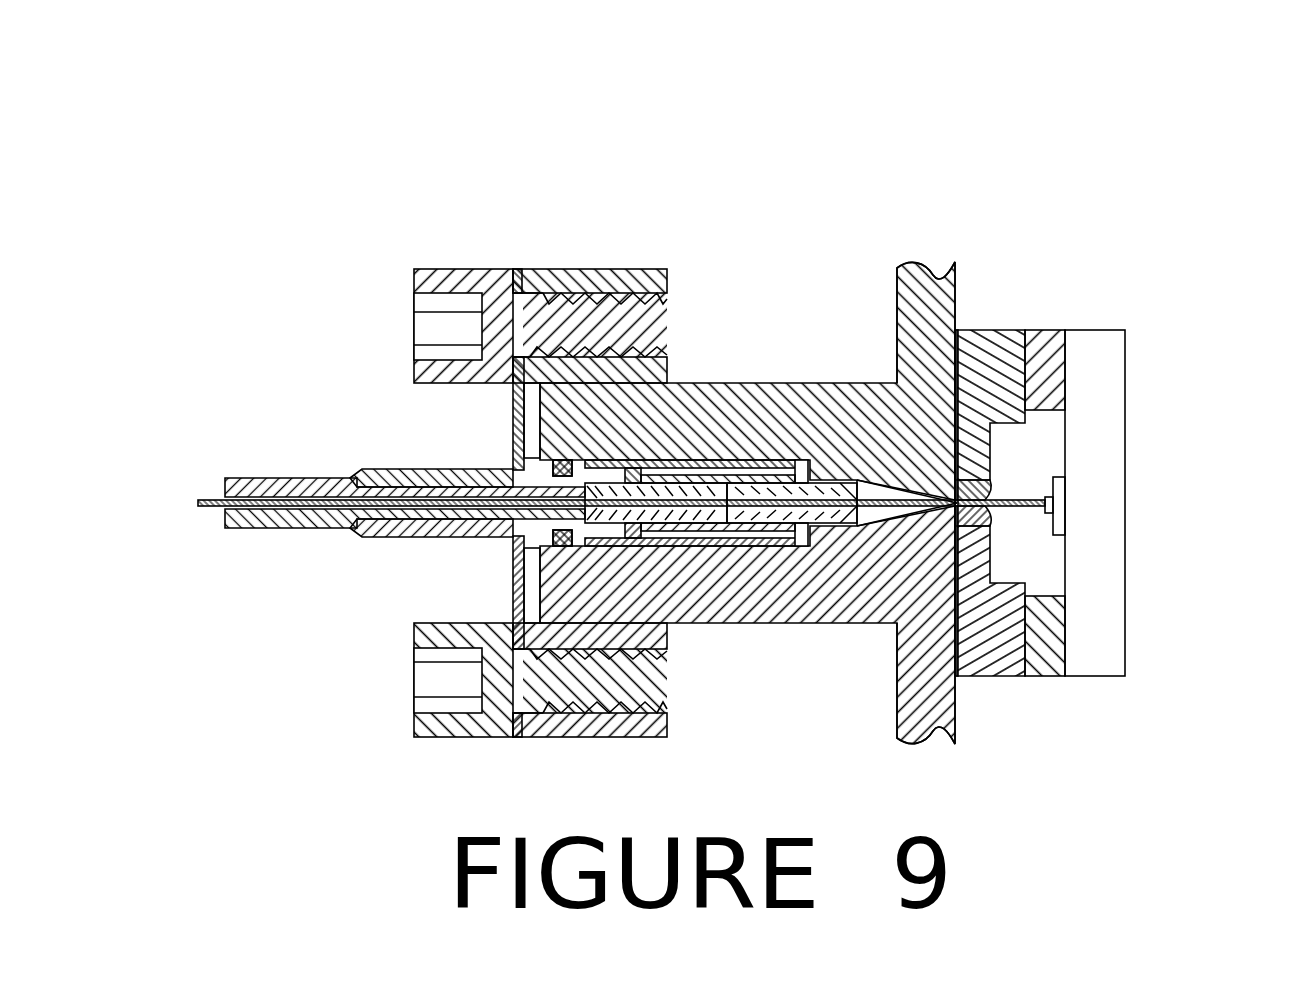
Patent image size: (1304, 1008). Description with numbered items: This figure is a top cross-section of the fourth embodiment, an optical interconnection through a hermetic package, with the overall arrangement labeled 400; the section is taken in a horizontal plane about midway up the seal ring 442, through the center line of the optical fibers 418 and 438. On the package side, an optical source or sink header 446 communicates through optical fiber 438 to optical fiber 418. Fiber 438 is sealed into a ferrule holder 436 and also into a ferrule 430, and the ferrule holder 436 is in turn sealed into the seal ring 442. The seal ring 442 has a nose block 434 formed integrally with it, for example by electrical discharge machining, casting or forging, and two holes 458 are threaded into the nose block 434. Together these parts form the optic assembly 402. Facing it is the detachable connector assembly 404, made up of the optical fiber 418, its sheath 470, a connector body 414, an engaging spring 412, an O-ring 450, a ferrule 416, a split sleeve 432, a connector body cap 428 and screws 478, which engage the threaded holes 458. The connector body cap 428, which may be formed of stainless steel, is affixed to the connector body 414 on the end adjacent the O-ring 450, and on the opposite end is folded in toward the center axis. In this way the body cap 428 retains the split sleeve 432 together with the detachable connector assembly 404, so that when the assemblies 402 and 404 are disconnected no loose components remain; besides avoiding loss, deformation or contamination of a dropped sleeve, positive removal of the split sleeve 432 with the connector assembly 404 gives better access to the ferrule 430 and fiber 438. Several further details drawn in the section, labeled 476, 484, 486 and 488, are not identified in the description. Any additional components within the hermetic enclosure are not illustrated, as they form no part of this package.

The probe assembly 400 is at (312, 72).
The optic assembly 402 is at (1195, 228).
The detachable connector assembly 404 is at (228, 692).
The engaging spring 412 is at (515, 269).
The connector body 414 is at (420, 472).
The ferrule 416 is at (535, 553).
The optical fiber 418 is at (203, 505).
The connector body cap 428 is at (793, 458).
The ferrule 430 is at (838, 523).
The split sleeve 432 is at (785, 535).
The nose block 434 is at (774, 395).
The ferrule holder 436 is at (1000, 338).
The optical fiber 438 is at (1030, 510).
The seal ring 442 is at (930, 283).
The optical source or sink header 446 is at (1112, 492).
The O-ring 450 is at (555, 462).
The holes 458 is at (623, 297).
The sheath 470 is at (385, 533).
The gland 476 is at (633, 530).
The screws 478 is at (428, 327).
The ferrule 484 is at (612, 460).
The gasket 486 is at (958, 665).
The seal 488 is at (990, 530).